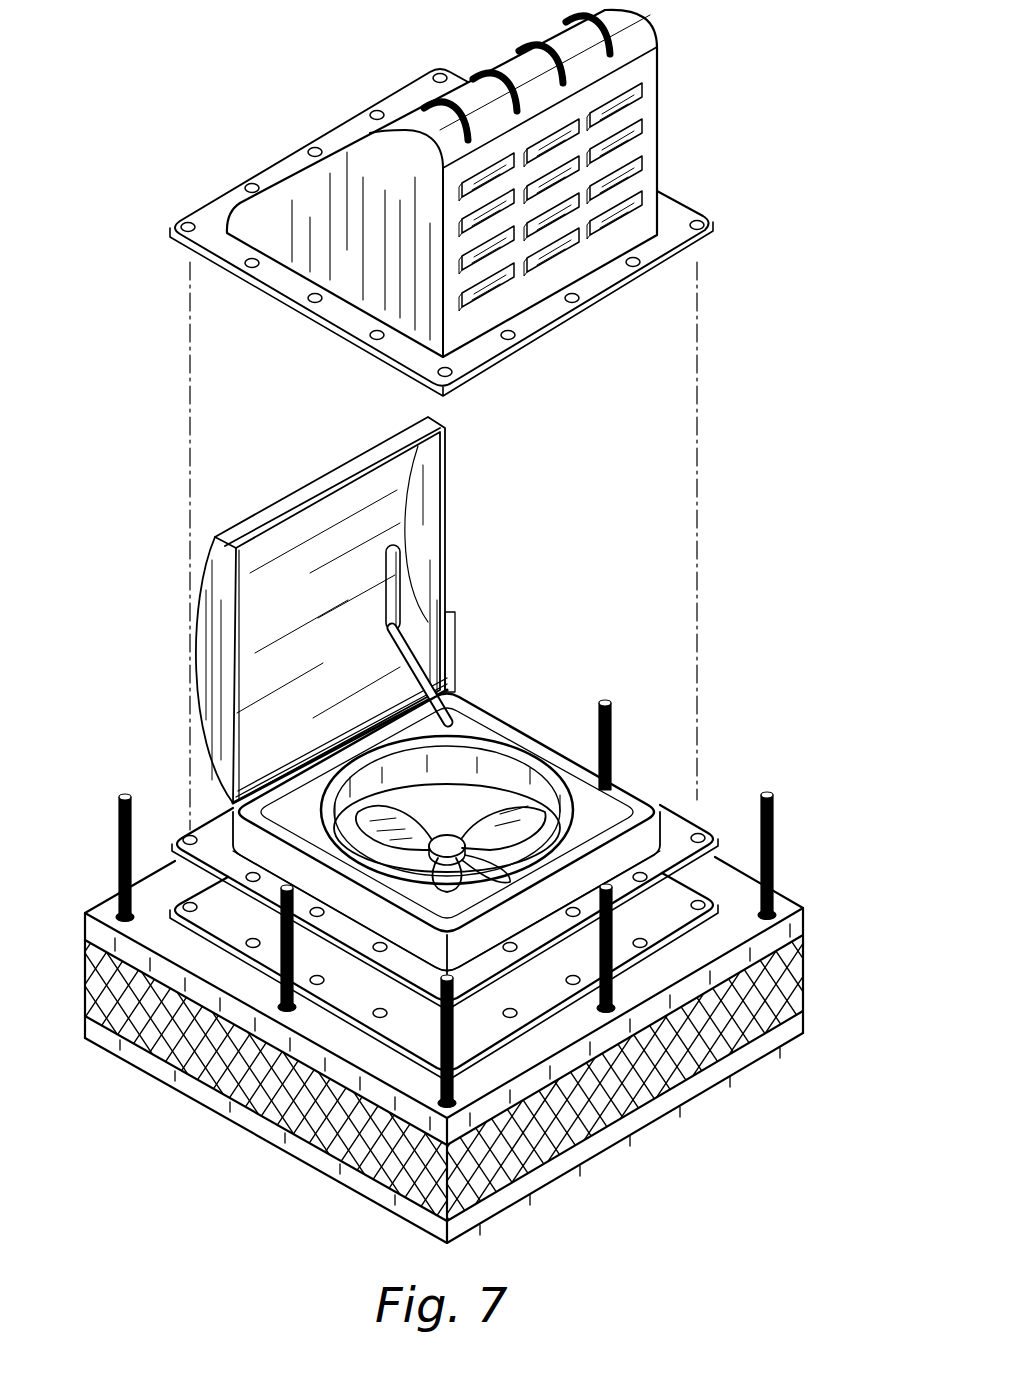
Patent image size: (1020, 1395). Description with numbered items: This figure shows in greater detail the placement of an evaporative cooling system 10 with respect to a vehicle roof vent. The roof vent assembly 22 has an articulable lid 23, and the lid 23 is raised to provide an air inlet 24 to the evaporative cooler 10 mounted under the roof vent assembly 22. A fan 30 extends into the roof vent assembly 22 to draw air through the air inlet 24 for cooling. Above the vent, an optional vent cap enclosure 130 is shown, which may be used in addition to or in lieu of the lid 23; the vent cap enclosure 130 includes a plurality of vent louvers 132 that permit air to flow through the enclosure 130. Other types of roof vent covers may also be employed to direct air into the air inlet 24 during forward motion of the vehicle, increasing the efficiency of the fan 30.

The evaporative cooling system 10 is at (704, 1112).
The roof vent assembly 22 is at (713, 825).
The articulable lid 23 is at (332, 478).
The air inlet 24 is at (500, 773).
The fan 30 is at (485, 815).
The vent cap enclosure 130 is at (653, 88).
The vent louvers 132 is at (502, 288).